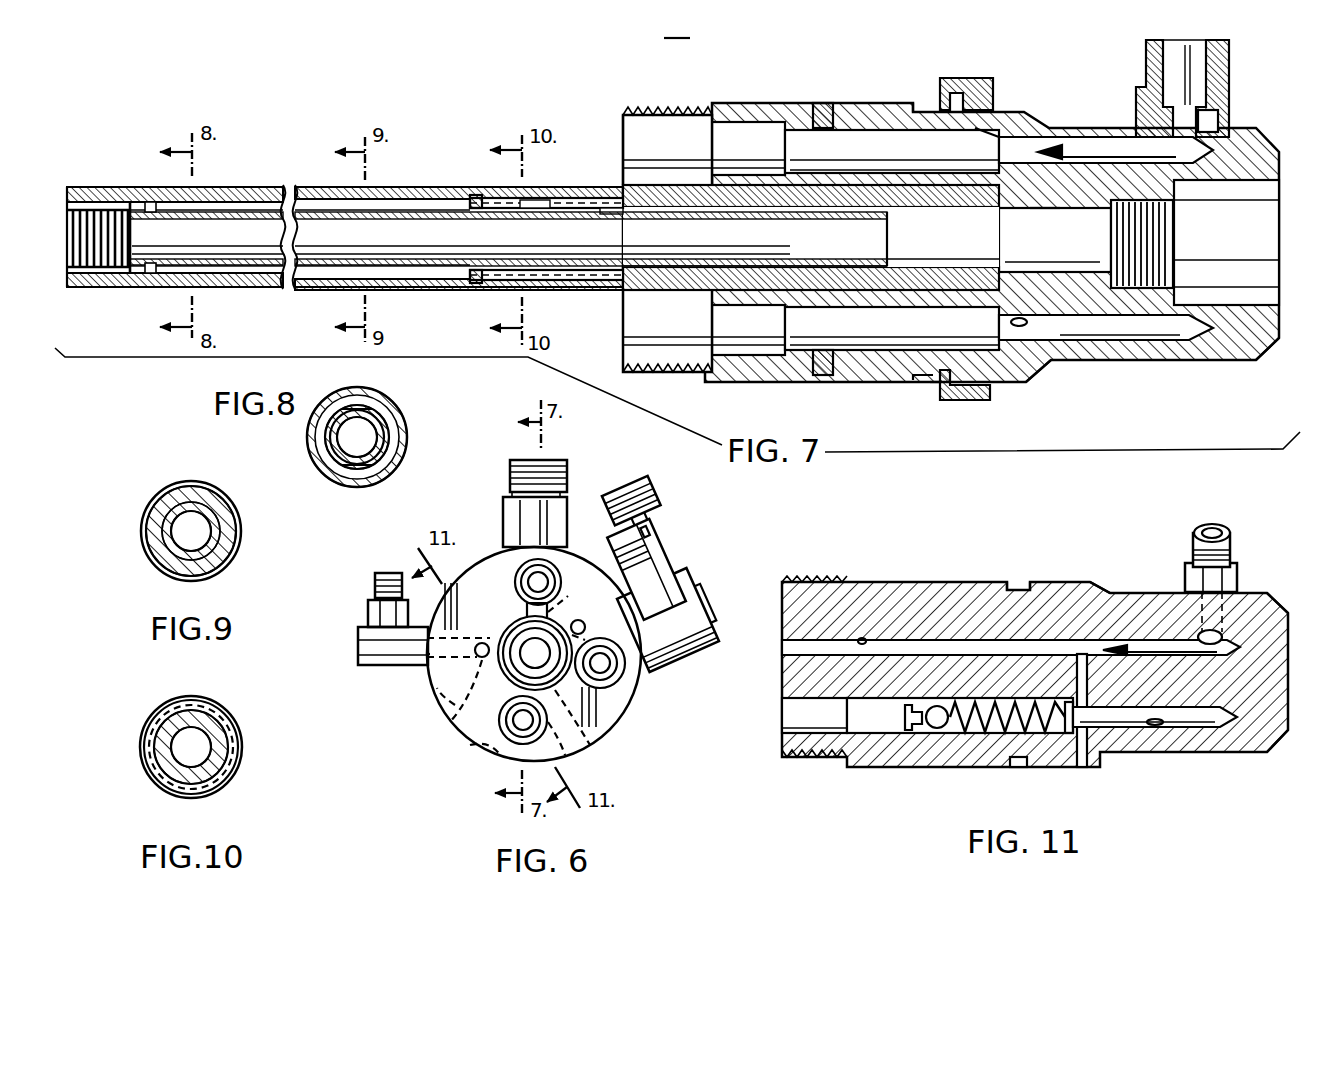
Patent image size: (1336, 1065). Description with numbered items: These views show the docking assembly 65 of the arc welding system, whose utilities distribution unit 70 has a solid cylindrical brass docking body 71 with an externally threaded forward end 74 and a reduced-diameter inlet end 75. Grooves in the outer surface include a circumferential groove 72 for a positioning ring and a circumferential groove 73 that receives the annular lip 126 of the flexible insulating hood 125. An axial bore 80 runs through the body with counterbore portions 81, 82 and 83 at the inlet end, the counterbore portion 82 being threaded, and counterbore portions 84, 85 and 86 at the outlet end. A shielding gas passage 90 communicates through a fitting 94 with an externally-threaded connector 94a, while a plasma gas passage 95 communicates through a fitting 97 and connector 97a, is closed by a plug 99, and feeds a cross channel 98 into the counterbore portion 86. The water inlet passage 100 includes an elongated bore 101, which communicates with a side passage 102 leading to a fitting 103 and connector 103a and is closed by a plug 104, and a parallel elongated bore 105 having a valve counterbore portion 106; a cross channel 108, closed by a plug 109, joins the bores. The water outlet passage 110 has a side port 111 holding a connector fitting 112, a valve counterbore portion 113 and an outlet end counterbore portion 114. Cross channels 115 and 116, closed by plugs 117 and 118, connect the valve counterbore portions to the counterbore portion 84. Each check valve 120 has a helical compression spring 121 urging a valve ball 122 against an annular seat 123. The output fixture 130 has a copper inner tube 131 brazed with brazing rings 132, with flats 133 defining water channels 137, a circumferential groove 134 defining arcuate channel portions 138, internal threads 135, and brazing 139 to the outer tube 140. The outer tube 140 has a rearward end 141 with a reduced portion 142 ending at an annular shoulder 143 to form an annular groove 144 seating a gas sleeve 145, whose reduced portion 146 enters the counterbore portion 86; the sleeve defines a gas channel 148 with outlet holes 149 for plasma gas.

In FIG. 7, the docking assembly 65 is at (378, 151).
In FIG. 7, the utilities distribution unit 70 is at (1062, 378).
In FIG. 6, the utilities distribution unit 70 is at (407, 750).
In FIG. 11, the utilities distribution unit 70 is at (937, 530).
In FIG. 7, the docking body 71 is at (853, 103).
In FIG. 6, the docking body 71 is at (632, 713).
In FIG. 11, the docking body 71 is at (912, 582).
In FIG. 7, the circumferential groove 72 is at (918, 110).
In FIG. 11, the circumferential groove 72 is at (1015, 582).
In FIG. 7, the circumferential groove 73 is at (935, 100).
In FIG. 11, the circumferential groove 73 is at (1032, 582).
In FIG. 7, the externally threaded forward end 74 is at (655, 108).
In FIG. 11, the externally threaded forward end 74 is at (805, 582).
In FIG. 7, the reduced-diameter inlet end 75 is at (1213, 360).
In FIG. 11, the reduced-diameter inlet end 75 is at (1218, 752).
In FIG. 7, the axial bore 80 is at (985, 225).
In FIG. 7, the counterbore portion 81 is at (1038, 208).
In FIG. 7, the counterbore portion 82 is at (1121, 238).
In FIG. 7, the counterbore portion 83 is at (1261, 300).
In FIG. 7, the counterbore portion 84 is at (887, 262).
In FIG. 7, the counterbore portion 85 is at (677, 260).
In FIG. 7, the counterbore portion 86 is at (650, 190).
In FIG. 6, the shielding gas passage 90 is at (623, 677).
In FIG. 6, the fitting 94 is at (700, 653).
In FIG. 6, the externally-threaded connector 94a is at (700, 580).
In FIG. 6, the plasma gas passage 95 is at (585, 625).
In FIG. 6, the fitting 97 is at (693, 553).
In FIG. 6, the externally-threaded connector 97a is at (653, 493).
In FIG. 6, the cross channel 98 is at (565, 612).
In FIG. 6, the plug 99 is at (586, 632).
In FIG. 6, the water inlet passage 100 is at (462, 737).
In FIG. 11, the water inlet passage 100 is at (1145, 635).
In FIG. 6, the elongated bore 101 is at (484, 645).
In FIG. 11, the elongated bore 101 is at (862, 638).
In FIG. 6, the side passage 102 is at (440, 680).
In FIG. 11, the side passage 102 is at (1253, 588).
In FIG. 6, the fitting 103 is at (358, 642).
In FIG. 6, the externally-threaded connector 103a is at (375, 584).
In FIG. 11, the externally-threaded connector 103a is at (1233, 543).
In FIG. 6, the plug 104 is at (490, 660).
In FIG. 11, the plug 104 is at (785, 645).
In FIG. 7, the elongated bore 105 is at (1118, 340).
In FIG. 6, the elongated bore 105 is at (508, 732).
In FIG. 11, the elongated bore 105 is at (1143, 722).
In FIG. 7, the valve counterbore portion 106 is at (907, 353).
In FIG. 11, the valve counterbore portion 106 is at (983, 733).
In FIG. 7, the cross channel 108 is at (1026, 317).
In FIG. 6, the cross channel 108 is at (578, 755).
In FIG. 11, the cross channel 108 is at (1080, 655).
In FIG. 11, the plug 109 is at (1080, 765).
In FIG. 7, the water outlet passage 110 is at (1062, 150).
In FIG. 6, the water outlet passage 110 is at (548, 572).
In FIG. 7, the side port 111 is at (1215, 118).
In FIG. 7, the connector fitting 112 is at (1146, 62).
In FIG. 6, the connector fitting 112 is at (510, 517).
In FIG. 7, the valve counterbore portion 113 is at (985, 137).
In FIG. 7, the outlet end counterbore portion 114 is at (624, 118).
In FIG. 7, the cross channel 115 is at (820, 307).
In FIG. 6, the cross channel 115 is at (597, 738).
In FIG. 7, the cross channel 116 is at (817, 172).
In FIG. 6, the cross channel 116 is at (562, 598).
In FIG. 7, the plug 117 is at (817, 385).
In FIG. 7, the plug 118 is at (820, 103).
In FIG. 11, the check valve 120 is at (835, 757).
In FIG. 11, the helical compression spring 121 is at (1052, 733).
In FIG. 11, the valve ball 122 is at (933, 733).
In FIG. 11, the annular seat 123 is at (907, 733).
In FIG. 7, the hood 125 is at (955, 400).
In FIG. 7, the annular lip 126 is at (940, 400).
In FIG. 7, the output fixture 130 is at (412, 183).
In FIG. 6, the output fixture 130 is at (512, 617).
In FIG. 7, the inner tube 131 is at (402, 215).
In FIG. 8, the inner tube 131 is at (390, 420).
In FIG. 9, the inner tube 131 is at (205, 532).
In FIG. 10, the inner tube 131 is at (177, 752).
In FIG. 7, the brazing rings 132 is at (867, 223).
In FIG. 7, the flats 133 is at (462, 212).
In FIG. 8, the flats 133 is at (357, 410).
In FIG. 9, the flats 133 is at (216, 499).
In FIG. 10, the flats 133 is at (208, 700).
In FIG. 8, the circumferential groove 134 is at (323, 442).
In FIG. 7, the internal threads 135 is at (67, 225).
In FIG. 7, the water channels 137 is at (232, 205).
In FIG. 9, the water channels 137 is at (185, 499).
In FIG. 8, the arcuate channel portions 138 is at (393, 430).
In FIG. 7, the brazing 139 is at (153, 280).
In FIG. 7, the outer tube 140 is at (325, 187).
In FIG. 8, the outer tube 140 is at (400, 468).
In FIG. 9, the outer tube 140 is at (142, 526).
In FIG. 7, the rearward end 141 is at (672, 290).
In FIG. 10, the rearward end 141 is at (127, 747).
In FIG. 7, the reduced outer-diameter portion 142 is at (535, 205).
In FIG. 7, the annular shoulder 143 is at (493, 187).
In FIG. 7, the annular groove 144 is at (563, 290).
In FIG. 7, the gas sleeve 145 is at (592, 188).
In FIG. 10, the gas sleeve 145 is at (240, 727).
In FIG. 7, the reduced outer diameter portion 146 is at (605, 218).
In FIG. 7, the gas channel 148 is at (540, 192).
In FIG. 10, the gas channel 148 is at (167, 700).
In FIG. 7, the outlet holes 149 is at (518, 287).
In FIG. 10, the outlet holes 149 is at (242, 780).